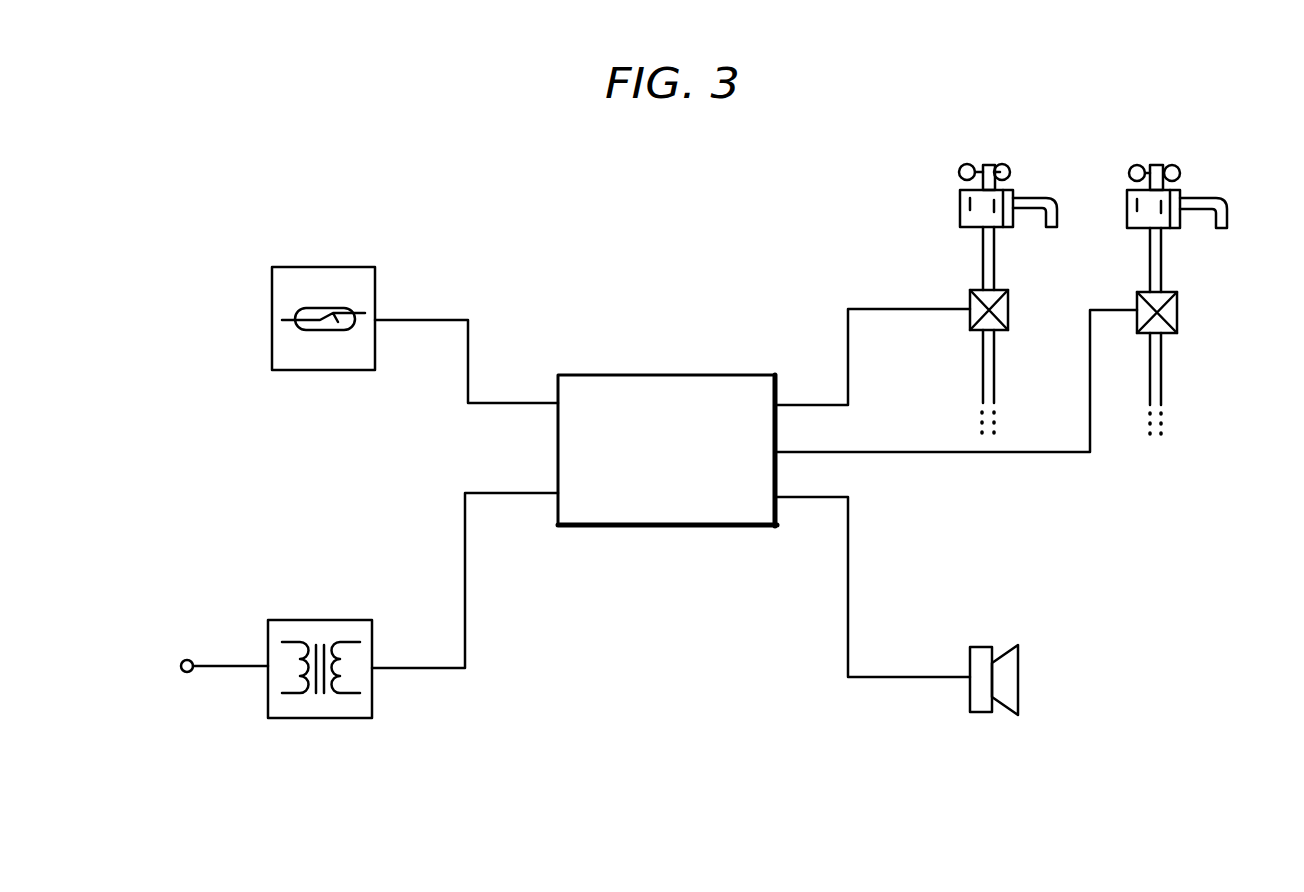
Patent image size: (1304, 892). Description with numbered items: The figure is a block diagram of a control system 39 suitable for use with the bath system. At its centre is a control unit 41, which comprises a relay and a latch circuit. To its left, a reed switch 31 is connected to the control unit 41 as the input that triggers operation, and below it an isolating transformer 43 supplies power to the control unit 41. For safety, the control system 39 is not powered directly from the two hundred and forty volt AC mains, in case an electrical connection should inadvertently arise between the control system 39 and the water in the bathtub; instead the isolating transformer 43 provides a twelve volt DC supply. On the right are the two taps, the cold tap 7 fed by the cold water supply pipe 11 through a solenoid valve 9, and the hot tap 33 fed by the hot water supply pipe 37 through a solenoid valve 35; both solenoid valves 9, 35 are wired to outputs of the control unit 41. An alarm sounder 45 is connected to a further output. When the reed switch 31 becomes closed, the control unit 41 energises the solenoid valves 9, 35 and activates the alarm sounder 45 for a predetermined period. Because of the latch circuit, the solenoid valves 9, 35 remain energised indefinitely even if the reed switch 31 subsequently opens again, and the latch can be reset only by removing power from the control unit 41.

The cold tap 7 is at (960, 190).
The solenoid valve 9 is at (970, 300).
The cold water supply pipe 11 is at (983, 385).
The reed switch 31 is at (375, 267).
The hot tap 33 is at (1180, 168).
The solenoid valve 35 is at (1177, 312).
The hot water supply pipe 37 is at (1162, 365).
The control system 39 is at (698, 668).
The control unit 41 is at (682, 527).
The isolating transformer 43 is at (372, 718).
The alarm sounder 45 is at (1018, 668).